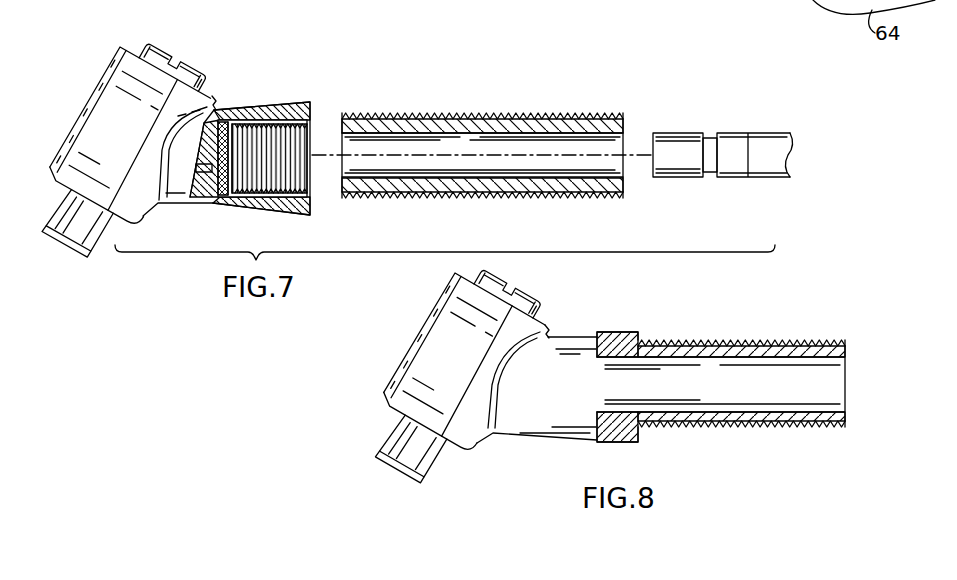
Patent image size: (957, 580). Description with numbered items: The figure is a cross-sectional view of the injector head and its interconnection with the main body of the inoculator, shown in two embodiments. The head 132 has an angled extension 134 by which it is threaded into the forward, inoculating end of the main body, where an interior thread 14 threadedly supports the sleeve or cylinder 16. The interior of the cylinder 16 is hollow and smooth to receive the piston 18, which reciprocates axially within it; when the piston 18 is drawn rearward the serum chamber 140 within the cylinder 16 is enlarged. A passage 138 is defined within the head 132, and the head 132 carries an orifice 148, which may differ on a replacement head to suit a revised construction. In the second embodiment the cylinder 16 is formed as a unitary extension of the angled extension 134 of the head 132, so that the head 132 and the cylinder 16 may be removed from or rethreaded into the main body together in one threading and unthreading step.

In FIG. 7, the head 132 is at (91, 93).
In FIG. 8, the head 132 is at (408, 351).
In FIG. 7, the angled extension 134 is at (282, 104).
In FIG. 8, the angled extension 134 is at (578, 333).
In FIG. 7, the passage 138 is at (205, 170).
In FIG. 7, the orifice 148 is at (62, 248).
In FIG. 8, the orifice 148 is at (397, 485).
In FIG. 7, the interior thread 14 is at (522, 97).
In FIG. 7, the cylinder 16 is at (626, 124).
In FIG. 8, the cylinder 16 is at (843, 345).
In FIG. 7, the serum chamber 140 is at (612, 161).
In FIG. 8, the serum chamber 140 is at (757, 389).
In FIG. 7, the piston 18 is at (737, 167).